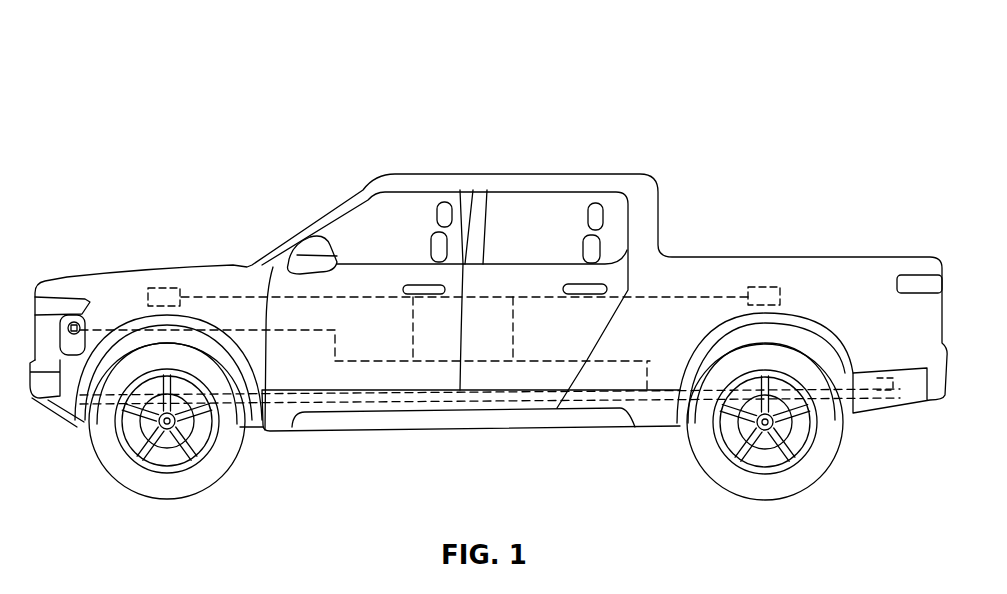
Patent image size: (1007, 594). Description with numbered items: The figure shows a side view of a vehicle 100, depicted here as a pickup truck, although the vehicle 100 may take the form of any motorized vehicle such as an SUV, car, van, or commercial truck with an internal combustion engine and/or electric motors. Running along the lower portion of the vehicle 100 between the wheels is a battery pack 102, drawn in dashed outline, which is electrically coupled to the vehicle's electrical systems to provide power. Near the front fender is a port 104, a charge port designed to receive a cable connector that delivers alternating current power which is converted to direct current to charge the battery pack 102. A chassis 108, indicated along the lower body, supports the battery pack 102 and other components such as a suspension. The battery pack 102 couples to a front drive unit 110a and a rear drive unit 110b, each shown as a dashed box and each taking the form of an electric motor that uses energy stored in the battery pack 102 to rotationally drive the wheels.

The vehicle 100 is at (212, 93).
The battery pack 102 is at (362, 375).
The port 104 is at (76, 328).
The chassis 108 is at (467, 406).
The drive unit 110a is at (162, 288).
The drive unit 110b is at (748, 287).